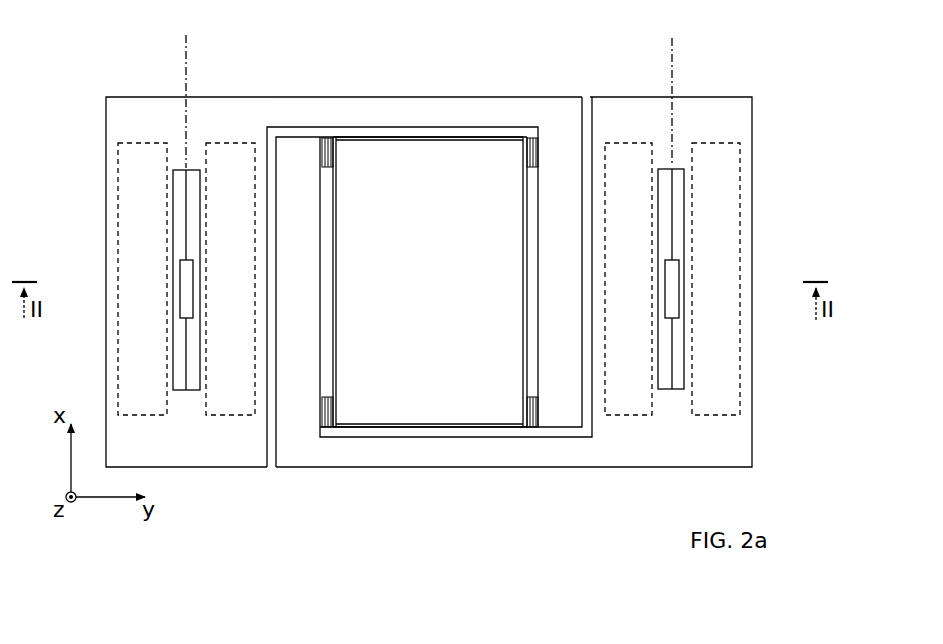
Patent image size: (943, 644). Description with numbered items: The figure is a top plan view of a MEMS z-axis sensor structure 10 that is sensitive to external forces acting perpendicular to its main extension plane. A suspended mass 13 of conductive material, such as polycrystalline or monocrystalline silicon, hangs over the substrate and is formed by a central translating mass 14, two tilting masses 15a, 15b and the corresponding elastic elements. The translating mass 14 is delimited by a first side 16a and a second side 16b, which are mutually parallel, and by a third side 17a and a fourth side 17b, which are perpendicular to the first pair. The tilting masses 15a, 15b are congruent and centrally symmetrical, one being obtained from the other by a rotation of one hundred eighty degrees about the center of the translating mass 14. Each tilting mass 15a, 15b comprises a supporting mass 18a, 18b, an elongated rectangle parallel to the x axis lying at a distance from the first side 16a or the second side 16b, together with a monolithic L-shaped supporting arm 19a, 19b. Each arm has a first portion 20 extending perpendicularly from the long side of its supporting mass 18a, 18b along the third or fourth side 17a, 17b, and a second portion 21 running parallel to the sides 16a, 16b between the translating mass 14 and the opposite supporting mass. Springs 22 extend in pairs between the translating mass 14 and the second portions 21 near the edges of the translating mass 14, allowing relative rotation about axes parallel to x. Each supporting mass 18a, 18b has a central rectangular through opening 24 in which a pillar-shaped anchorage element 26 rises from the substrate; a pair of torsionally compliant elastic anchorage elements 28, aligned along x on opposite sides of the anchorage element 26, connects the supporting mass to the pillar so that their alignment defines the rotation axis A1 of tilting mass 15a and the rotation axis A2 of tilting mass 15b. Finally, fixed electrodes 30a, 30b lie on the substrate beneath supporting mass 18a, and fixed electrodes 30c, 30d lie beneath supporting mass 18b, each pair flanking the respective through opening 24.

The structure 10 is at (126, 49).
The suspended mass 13 is at (755, 121).
The translating mass 14 is at (447, 293).
The tilting mass 15a is at (246, 108).
The tilting mass 15b is at (613, 455).
The first side 16a is at (341, 271).
The second side 16b is at (519, 299).
The third side 17a is at (411, 419).
The fourth side 17b is at (460, 143).
The supporting mass 18a is at (123, 100).
The supporting mass 18b is at (740, 448).
The supporting arm 19a is at (413, 92).
The supporting arm 19b is at (412, 471).
The first portion 20 is at (365, 110).
The second portion 21 is at (311, 298).
The spring 22 is at (333, 127).
The through opening 24 is at (185, 168).
The anchorage element 26 is at (186, 293).
The elastic anchorage element 28 is at (186, 200).
The fixed electrode 30a is at (115, 262).
The fixed electrode 30b is at (238, 141).
The fixed electrode 30c is at (746, 157).
The fixed electrode 30d is at (628, 143).
The rotation axis A1 is at (187, 55).
The rotation axis A2 is at (672, 55).